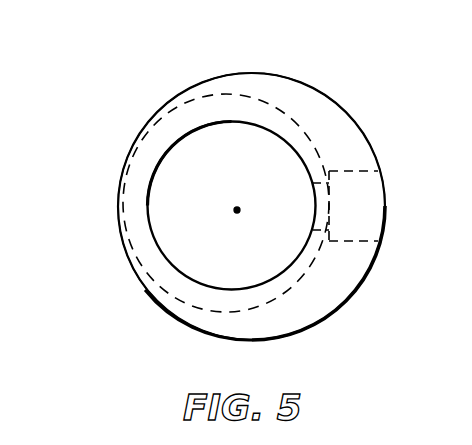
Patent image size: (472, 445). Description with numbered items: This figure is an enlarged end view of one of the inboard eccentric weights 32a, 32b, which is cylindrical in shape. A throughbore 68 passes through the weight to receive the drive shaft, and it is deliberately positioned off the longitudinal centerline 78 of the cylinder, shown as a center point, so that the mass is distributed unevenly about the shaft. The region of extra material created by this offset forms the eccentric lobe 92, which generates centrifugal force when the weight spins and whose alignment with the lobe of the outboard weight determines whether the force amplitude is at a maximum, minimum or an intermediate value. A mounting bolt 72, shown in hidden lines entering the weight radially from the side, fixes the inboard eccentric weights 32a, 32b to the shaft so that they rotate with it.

The inboard eccentric weight 32a is at (265, 72).
The inboard eccentric weight 32b is at (251, 206).
The throughbore 68 is at (218, 125).
The mounting bolt 72 is at (355, 203).
The longitudinal centerline 78 is at (237, 212).
The eccentric lobe 92 is at (340, 267).